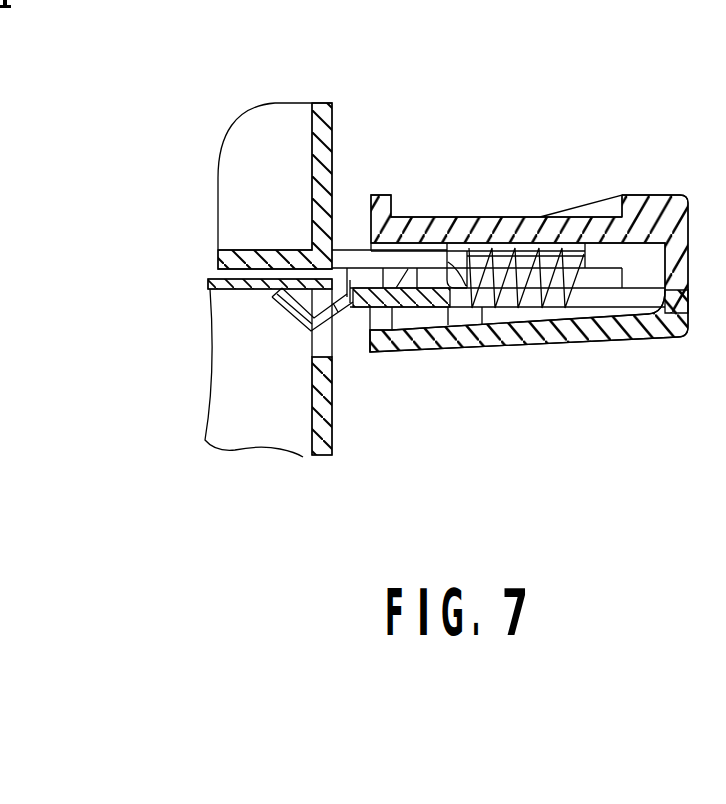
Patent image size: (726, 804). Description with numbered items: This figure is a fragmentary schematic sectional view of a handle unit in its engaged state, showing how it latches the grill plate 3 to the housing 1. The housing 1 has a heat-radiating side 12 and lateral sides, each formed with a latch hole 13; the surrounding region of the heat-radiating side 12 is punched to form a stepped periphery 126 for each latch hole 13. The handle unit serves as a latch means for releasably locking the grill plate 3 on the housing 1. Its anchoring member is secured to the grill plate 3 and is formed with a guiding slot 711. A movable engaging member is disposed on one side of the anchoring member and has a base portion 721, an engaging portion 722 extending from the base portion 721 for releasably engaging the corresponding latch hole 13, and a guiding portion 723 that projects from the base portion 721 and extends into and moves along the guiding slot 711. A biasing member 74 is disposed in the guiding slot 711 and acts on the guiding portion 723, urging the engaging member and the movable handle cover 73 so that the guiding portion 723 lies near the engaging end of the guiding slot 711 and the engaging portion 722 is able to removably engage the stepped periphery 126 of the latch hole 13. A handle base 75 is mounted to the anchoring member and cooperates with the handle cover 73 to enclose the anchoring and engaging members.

The housing 1 is at (350, 457).
The grill plate 3 is at (312, 146).
The heat-radiating side 12 is at (211, 278).
The stepped periphery 126 is at (298, 293).
The latch hole 13 is at (313, 345).
The guiding slot 711 is at (432, 276).
The movable handle cover 73 is at (650, 196).
The base portion 721 is at (412, 298).
The engaging portion 722 is at (313, 332).
The guiding portion 723 is at (474, 288).
The biasing member 74 is at (508, 306).
The handle base 75 is at (635, 340).